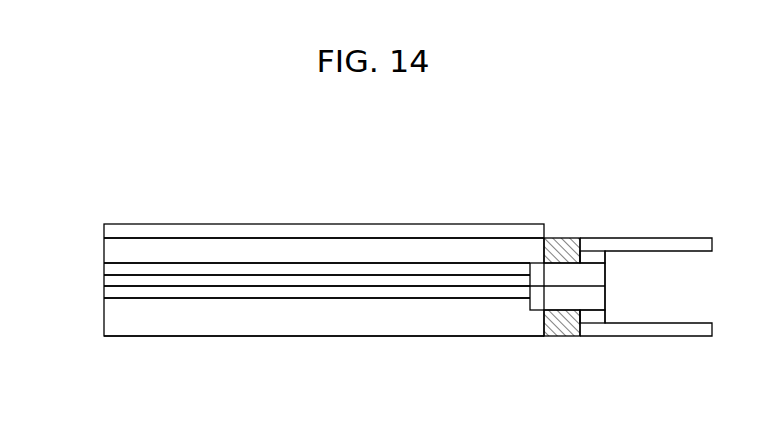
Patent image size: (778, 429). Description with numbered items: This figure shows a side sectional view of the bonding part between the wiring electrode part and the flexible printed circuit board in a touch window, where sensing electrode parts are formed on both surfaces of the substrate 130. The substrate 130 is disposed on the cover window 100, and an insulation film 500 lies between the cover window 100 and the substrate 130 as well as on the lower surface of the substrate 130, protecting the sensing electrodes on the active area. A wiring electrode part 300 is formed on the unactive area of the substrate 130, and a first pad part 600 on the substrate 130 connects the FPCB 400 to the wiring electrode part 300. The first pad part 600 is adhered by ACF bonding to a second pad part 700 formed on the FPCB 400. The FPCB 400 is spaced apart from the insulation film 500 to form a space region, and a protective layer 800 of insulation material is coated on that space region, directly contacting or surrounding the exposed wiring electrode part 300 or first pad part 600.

The cover window 100 is at (391, 224).
The substrate 130 is at (117, 281).
The wiring electrode part 300 is at (211, 270).
The FPCB 400 is at (665, 245).
The insulation film 500 is at (296, 250).
The first pad part 600 is at (597, 275).
The second pad part 700 is at (593, 249).
The protective layer 800 is at (559, 243).